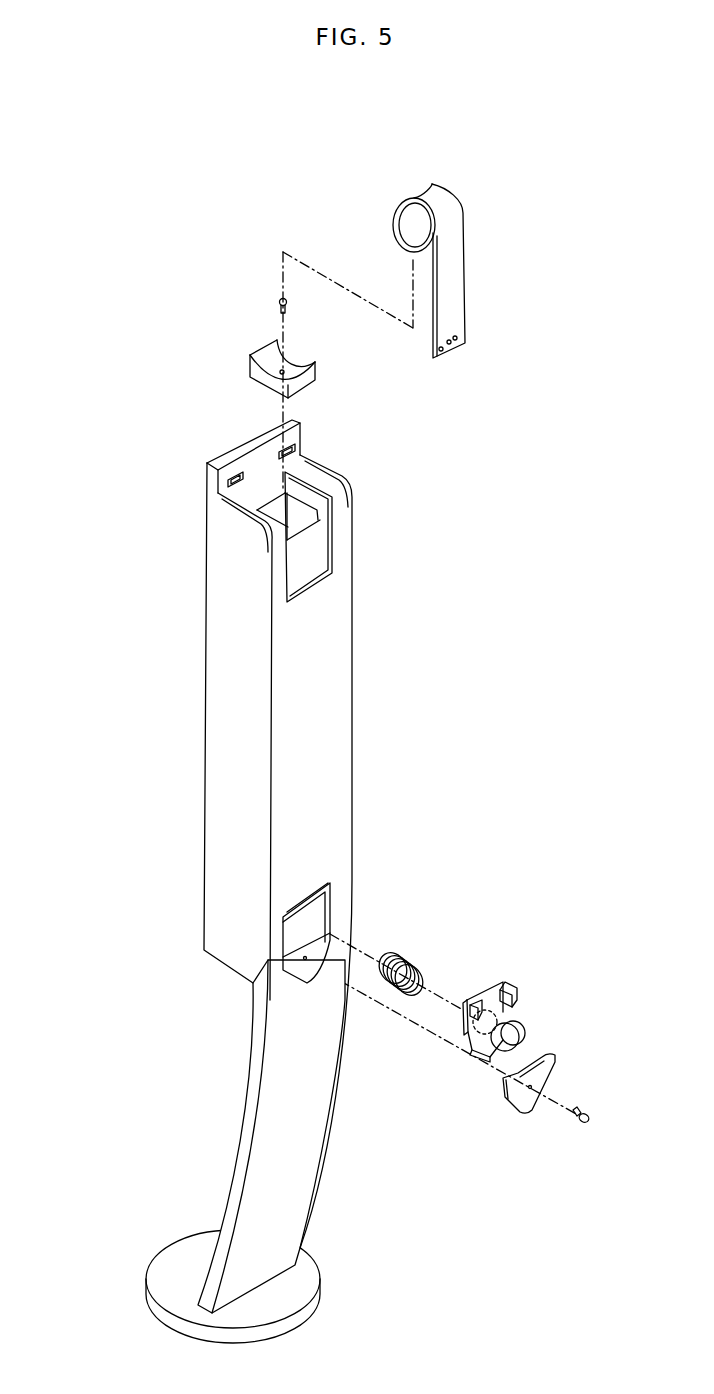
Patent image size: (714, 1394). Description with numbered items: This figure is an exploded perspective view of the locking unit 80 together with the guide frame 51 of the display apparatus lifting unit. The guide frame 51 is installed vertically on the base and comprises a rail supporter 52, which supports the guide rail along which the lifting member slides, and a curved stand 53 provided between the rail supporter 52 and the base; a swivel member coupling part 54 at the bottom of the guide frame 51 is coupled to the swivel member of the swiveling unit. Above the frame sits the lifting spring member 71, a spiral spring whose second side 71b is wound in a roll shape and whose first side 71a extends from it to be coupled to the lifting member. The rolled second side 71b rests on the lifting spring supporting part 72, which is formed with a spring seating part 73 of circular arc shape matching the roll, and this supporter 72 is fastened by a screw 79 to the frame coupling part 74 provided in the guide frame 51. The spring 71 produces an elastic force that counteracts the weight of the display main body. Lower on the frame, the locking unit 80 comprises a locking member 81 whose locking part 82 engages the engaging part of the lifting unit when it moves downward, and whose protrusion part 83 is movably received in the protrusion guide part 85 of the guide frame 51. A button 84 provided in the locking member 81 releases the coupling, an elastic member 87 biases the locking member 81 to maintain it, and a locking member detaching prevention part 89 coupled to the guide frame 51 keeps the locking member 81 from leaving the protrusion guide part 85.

The guide frame 51 is at (70, 877).
The rail supporter 52 is at (252, 834).
The curved stand 53 is at (247, 1103).
The swivel member coupling part 54 is at (156, 1271).
The lifting spring member 71 is at (499, 271).
The first side 71a is at (558, 222).
The second side 71b is at (463, 213).
The lifting spring supporting part 72 is at (262, 383).
The spring seating part 73 is at (250, 355).
The frame coupling part 74 is at (280, 518).
The screw 79 is at (276, 305).
The locking unit 80 is at (398, 866).
The locking member 81 is at (468, 911).
The locking part 82 is at (503, 982).
The protrusion part 83 is at (460, 1052).
The button 84 is at (528, 1018).
The protrusion guide part 85 is at (330, 922).
The elastic member 87 is at (407, 957).
The locking member detaching prevention part 89 is at (557, 1072).